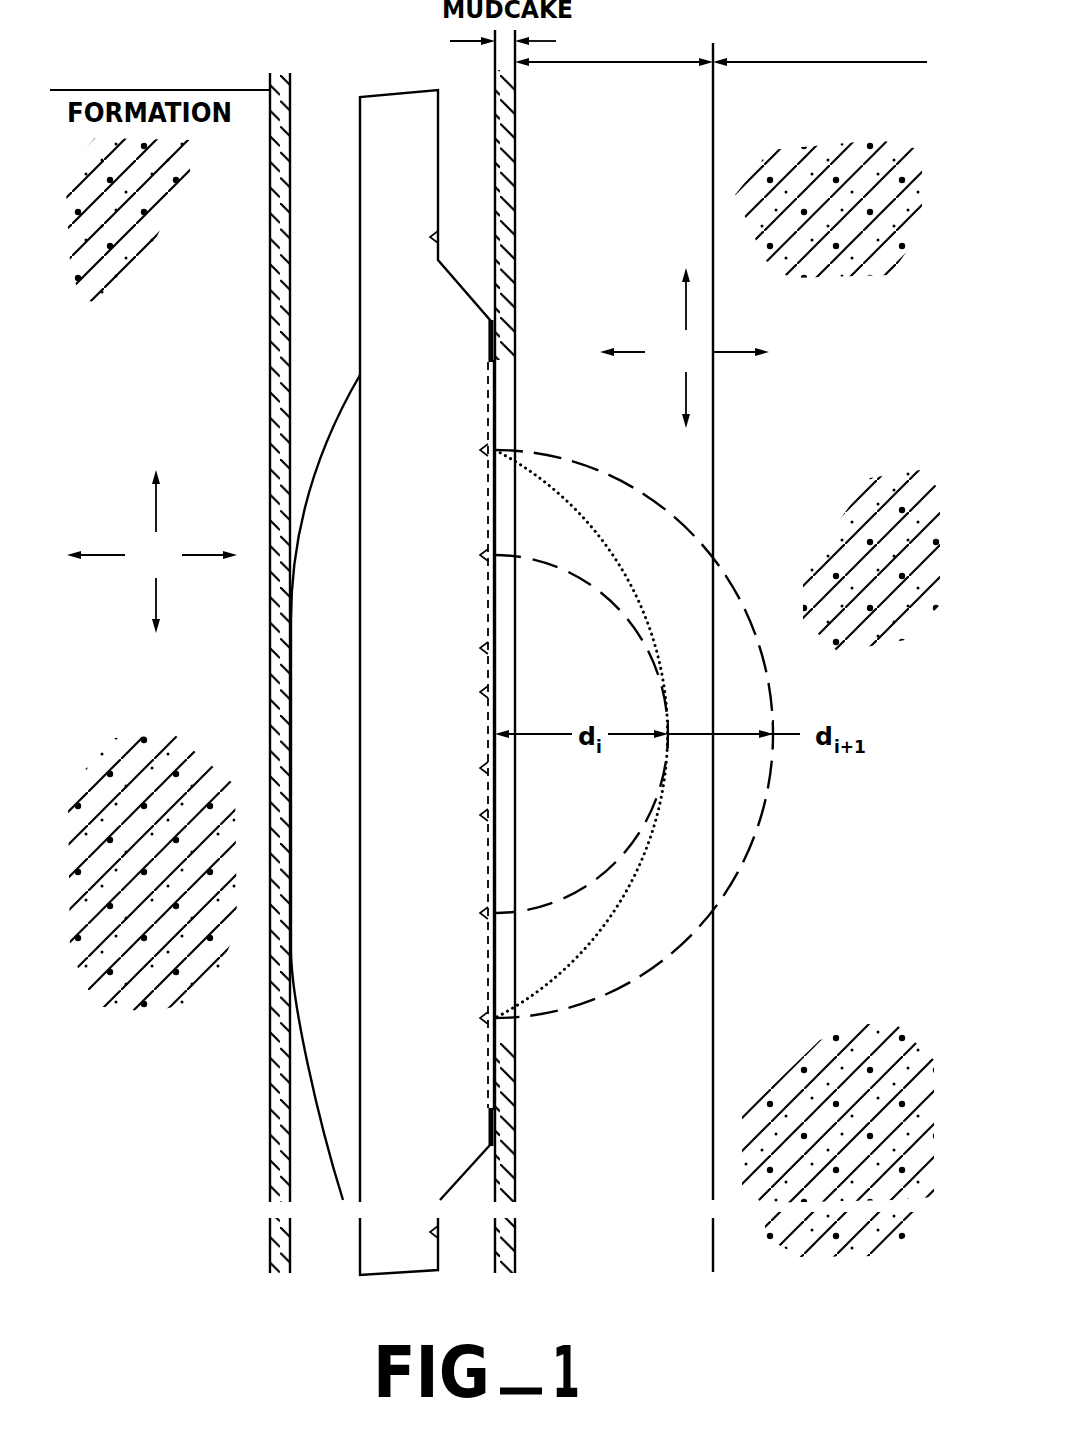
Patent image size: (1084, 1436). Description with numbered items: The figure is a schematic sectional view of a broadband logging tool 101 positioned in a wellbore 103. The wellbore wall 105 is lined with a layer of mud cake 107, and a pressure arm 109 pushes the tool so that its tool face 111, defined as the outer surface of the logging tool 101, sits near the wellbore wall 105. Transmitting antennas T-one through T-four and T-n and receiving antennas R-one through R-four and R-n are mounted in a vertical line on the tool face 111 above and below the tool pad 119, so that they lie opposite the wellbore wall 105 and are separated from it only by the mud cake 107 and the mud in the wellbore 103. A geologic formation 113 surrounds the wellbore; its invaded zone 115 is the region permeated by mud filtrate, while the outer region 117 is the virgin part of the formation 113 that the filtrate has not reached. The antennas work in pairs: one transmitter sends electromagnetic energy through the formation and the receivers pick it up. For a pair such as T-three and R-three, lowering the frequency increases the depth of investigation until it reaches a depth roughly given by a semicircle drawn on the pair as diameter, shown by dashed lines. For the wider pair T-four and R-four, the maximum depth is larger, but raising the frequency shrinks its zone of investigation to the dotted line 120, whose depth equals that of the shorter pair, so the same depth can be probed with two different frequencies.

The logging tool 101 is at (337, 255).
The wellbore 103 is at (343, 88).
The wellbore wall 105 is at (260, 282).
The mud cake 107 is at (282, 216).
The pressure arm 109 is at (302, 533).
The tool face 111 is at (438, 172).
The geologic formation 113 is at (418, 450).
The invaded zone 115 is at (620, 312).
The outer region 117 is at (858, 304).
The tool pad 119 is at (490, 424).
The dotted line 120 is at (618, 562).